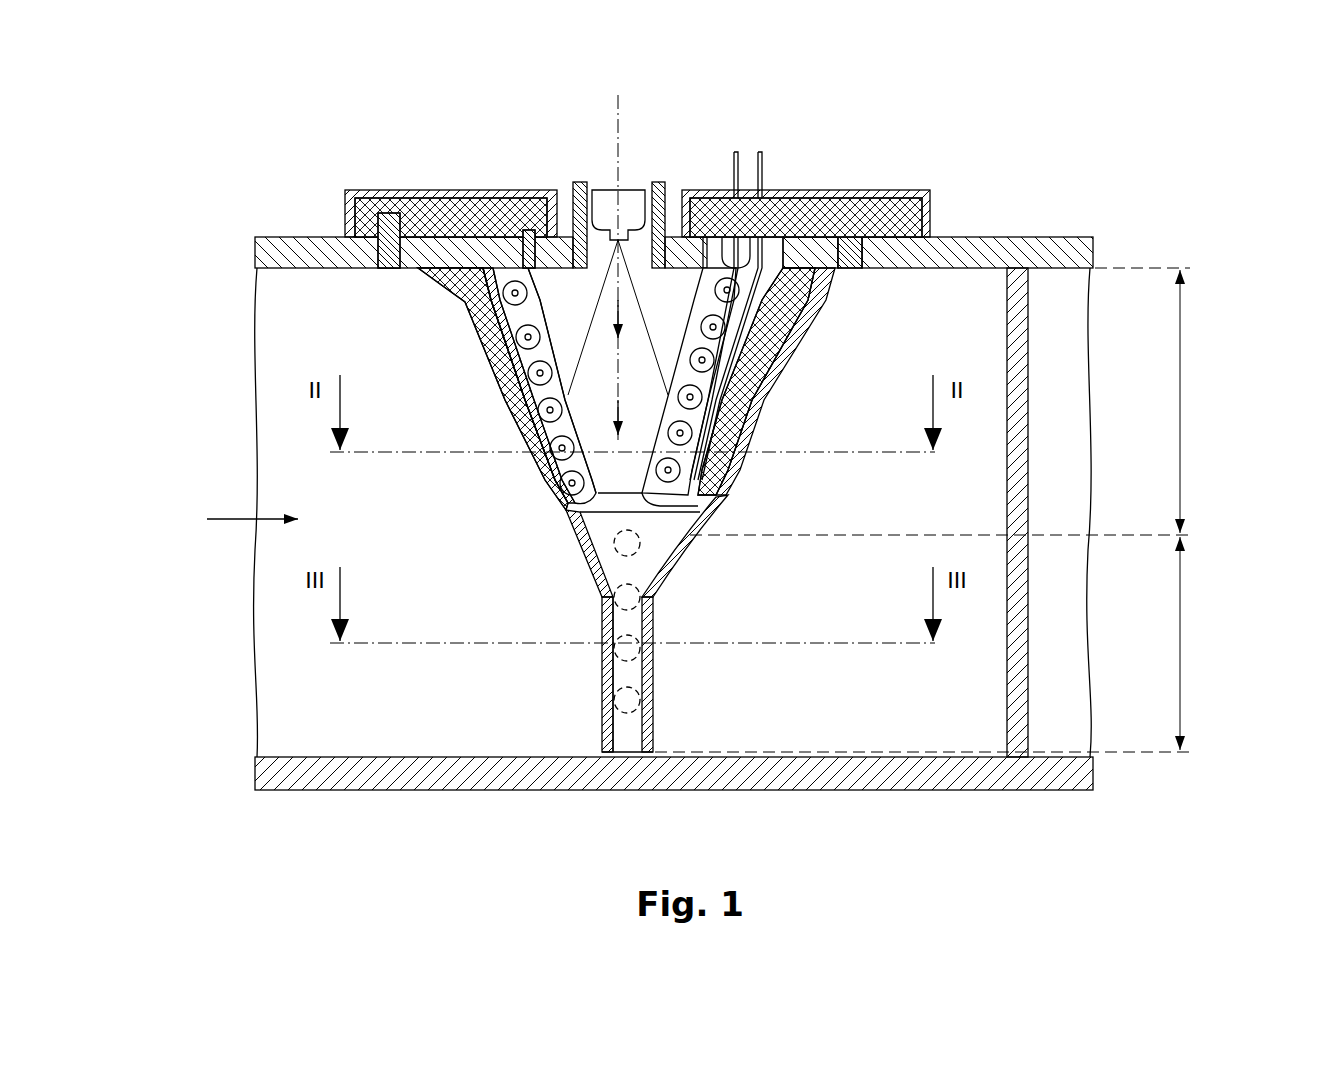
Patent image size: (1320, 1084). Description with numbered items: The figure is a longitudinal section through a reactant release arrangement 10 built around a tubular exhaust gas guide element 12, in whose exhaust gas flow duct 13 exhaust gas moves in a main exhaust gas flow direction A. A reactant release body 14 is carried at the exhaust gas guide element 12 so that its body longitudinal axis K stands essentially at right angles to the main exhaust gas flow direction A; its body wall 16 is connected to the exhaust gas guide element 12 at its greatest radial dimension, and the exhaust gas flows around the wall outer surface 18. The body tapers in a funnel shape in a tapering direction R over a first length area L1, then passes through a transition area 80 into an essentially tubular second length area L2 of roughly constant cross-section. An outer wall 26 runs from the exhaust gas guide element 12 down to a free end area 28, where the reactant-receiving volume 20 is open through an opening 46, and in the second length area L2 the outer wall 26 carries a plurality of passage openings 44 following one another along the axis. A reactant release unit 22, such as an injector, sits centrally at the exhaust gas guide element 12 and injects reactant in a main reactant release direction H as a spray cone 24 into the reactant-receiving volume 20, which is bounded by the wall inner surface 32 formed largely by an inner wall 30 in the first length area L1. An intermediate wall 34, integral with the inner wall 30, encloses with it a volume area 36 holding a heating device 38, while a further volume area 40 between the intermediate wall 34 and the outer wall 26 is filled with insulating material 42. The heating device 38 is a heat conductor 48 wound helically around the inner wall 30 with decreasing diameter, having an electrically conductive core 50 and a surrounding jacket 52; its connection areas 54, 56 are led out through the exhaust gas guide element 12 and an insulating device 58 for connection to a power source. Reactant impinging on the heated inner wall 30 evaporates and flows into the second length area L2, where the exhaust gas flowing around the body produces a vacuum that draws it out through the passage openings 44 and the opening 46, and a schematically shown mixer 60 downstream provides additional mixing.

The reactant release arrangement 10 is at (1131, 180).
The exhaust gas guide element 12 is at (257, 790).
The exhaust gas flow duct 13 is at (268, 643).
The reactant release body 14 is at (524, 610).
The body wall 16 is at (684, 612).
The wall outer surface 18 is at (584, 575).
The reactant-receiving volume 20 is at (527, 300).
The reactant release unit 22 is at (600, 270).
The spray cone 24 is at (562, 303).
The outer wall 26 is at (722, 508).
The free end area 28 is at (660, 760).
The inner wall 30 is at (597, 462).
The wall inner surface 32 is at (683, 317).
The intermediate wall 34 is at (485, 345).
The volume area 36 is at (727, 308).
The heating device 38 is at (560, 468).
The volume area 40 is at (425, 270).
The insulating material 42 is at (505, 388).
The passage openings 44 is at (617, 647).
The opening 46 is at (627, 754).
The heat conductor 48 is at (790, 255).
The electrically conductive core 50 is at (678, 532).
The jacket 52 is at (717, 450).
The connection area 54 is at (735, 160).
The connection area 56 is at (766, 160).
The insulating device 58 is at (910, 208).
The mixer 60 is at (1028, 722).
The transition area 80 is at (575, 522).
The main exhaust gas flow direction A is at (205, 519).
The body longitudinal axis K is at (618, 130).
The main reactant release direction H is at (705, 343).
The tapering direction R is at (710, 405).
The first length area L1 is at (1182, 402).
The second length area L2 is at (1182, 645).